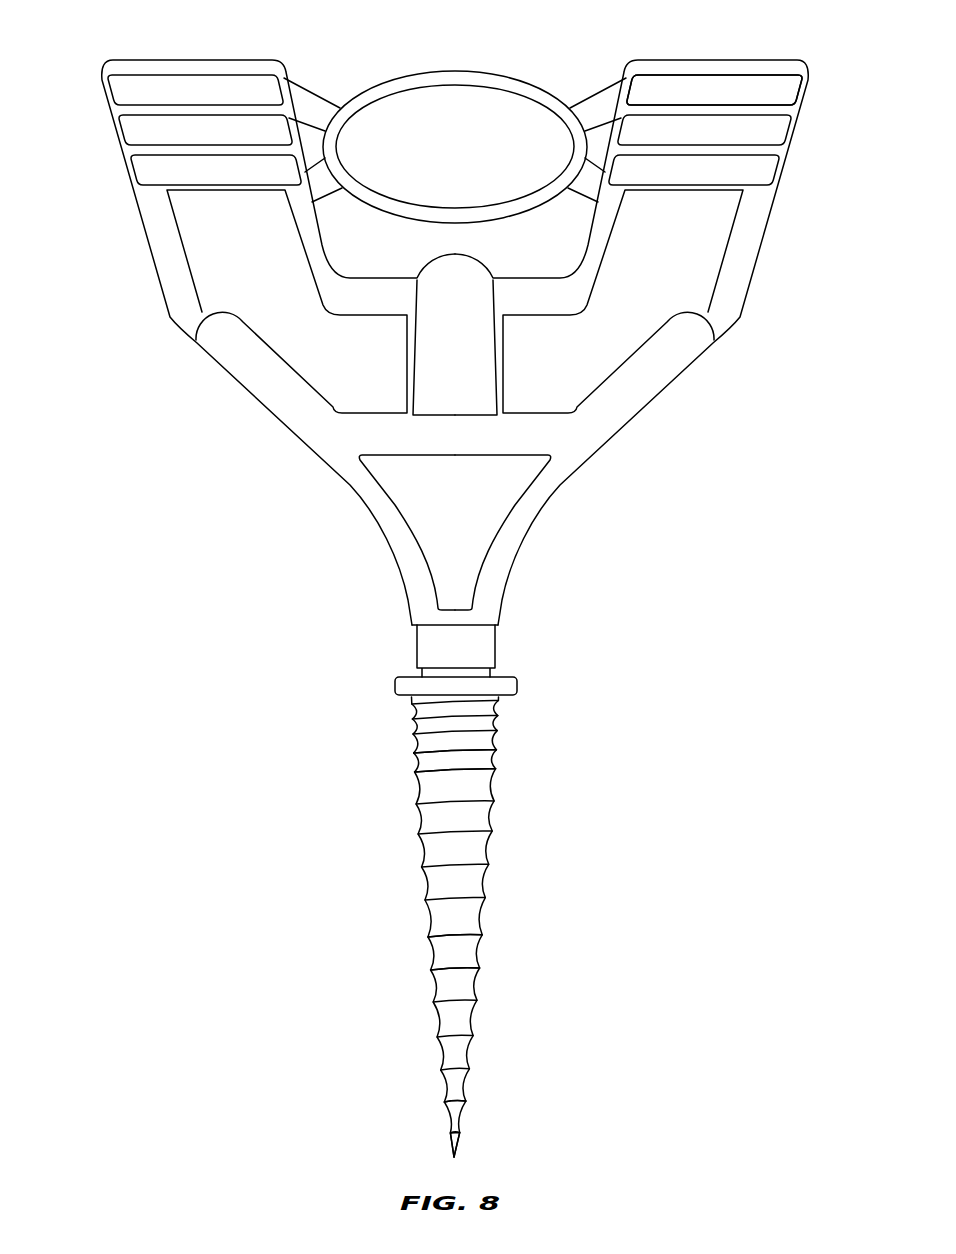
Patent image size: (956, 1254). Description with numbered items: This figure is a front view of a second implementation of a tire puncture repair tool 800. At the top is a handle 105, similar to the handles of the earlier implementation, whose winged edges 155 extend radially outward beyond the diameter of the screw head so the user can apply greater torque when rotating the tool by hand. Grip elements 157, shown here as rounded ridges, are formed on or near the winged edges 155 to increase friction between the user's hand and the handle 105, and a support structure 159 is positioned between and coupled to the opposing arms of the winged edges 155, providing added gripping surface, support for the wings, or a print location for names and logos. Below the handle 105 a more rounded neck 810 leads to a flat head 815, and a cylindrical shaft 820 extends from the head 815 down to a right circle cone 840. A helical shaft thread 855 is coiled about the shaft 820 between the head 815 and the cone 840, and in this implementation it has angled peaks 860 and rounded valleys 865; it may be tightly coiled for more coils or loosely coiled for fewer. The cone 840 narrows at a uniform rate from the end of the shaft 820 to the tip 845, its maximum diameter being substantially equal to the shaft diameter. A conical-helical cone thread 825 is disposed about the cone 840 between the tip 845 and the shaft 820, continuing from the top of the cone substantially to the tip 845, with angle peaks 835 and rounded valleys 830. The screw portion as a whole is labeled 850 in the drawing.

The tire puncture repair tool 800 is at (193, 442).
The handle 105 is at (650, 358).
The winged edges 155 is at (140, 217).
The grip element 157 is at (733, 92).
The support structure 159 is at (413, 117).
The bone screw 850 is at (494, 893).
The neck 810 is at (427, 670).
The flat head 815 is at (398, 685).
The shaft 820 is at (483, 704).
The shaft thread 855 is at (412, 731).
The peaks 860 is at (495, 751).
The valleys 865 is at (497, 757).
The right circle cone 840 is at (437, 823).
The cone thread 825 is at (450, 892).
The angle peaks 835 is at (482, 928).
The rounded valleys 830 is at (480, 948).
The tip 845 is at (455, 1157).